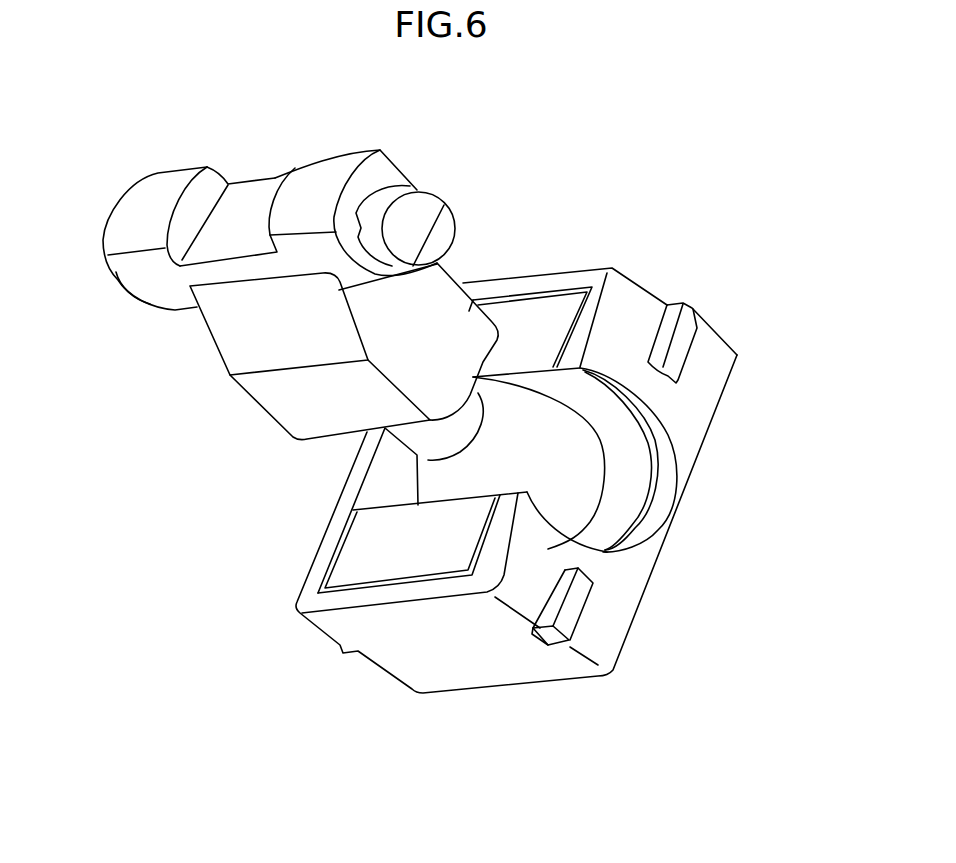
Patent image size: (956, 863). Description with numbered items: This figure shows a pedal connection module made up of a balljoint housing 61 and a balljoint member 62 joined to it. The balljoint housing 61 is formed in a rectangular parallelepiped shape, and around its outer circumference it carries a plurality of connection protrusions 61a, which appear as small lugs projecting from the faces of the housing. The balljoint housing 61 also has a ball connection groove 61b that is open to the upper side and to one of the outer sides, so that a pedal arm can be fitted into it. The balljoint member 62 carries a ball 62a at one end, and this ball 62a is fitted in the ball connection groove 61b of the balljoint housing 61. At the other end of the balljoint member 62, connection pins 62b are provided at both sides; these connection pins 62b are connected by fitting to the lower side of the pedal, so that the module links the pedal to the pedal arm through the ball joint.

The balljoint housing 61 is at (546, 283).
The connection protrusions 61a is at (688, 318).
The ball connection groove 61b is at (625, 503).
The balljoint member 62 is at (278, 397).
The ball 62a is at (573, 463).
The connection pins 62b is at (426, 216).